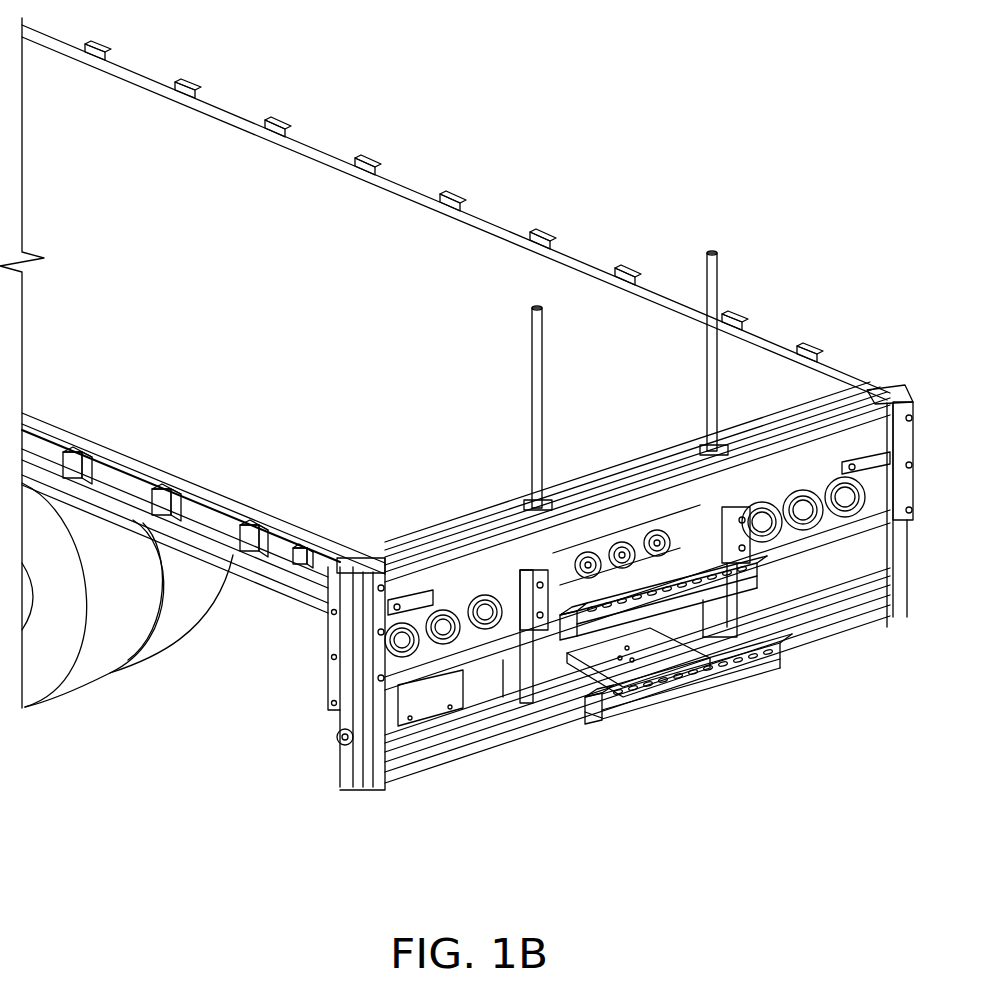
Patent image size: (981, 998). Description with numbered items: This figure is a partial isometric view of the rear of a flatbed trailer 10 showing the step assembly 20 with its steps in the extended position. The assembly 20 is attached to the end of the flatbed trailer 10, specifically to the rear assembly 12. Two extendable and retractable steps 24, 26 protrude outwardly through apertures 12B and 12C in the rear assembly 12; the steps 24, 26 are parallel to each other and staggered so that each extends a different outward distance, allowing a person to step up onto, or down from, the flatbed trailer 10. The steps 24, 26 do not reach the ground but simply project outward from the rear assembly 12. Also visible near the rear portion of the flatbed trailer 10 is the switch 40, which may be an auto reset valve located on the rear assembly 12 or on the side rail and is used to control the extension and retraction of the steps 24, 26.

The flatbed trailer 10 is at (426, 160).
The rear assembly 12 is at (585, 575).
The aperture 12B is at (603, 640).
The aperture 12C is at (757, 623).
The assembly 20 is at (616, 752).
The step 24 is at (658, 562).
The step 26 is at (680, 686).
The switch 40 is at (300, 578).